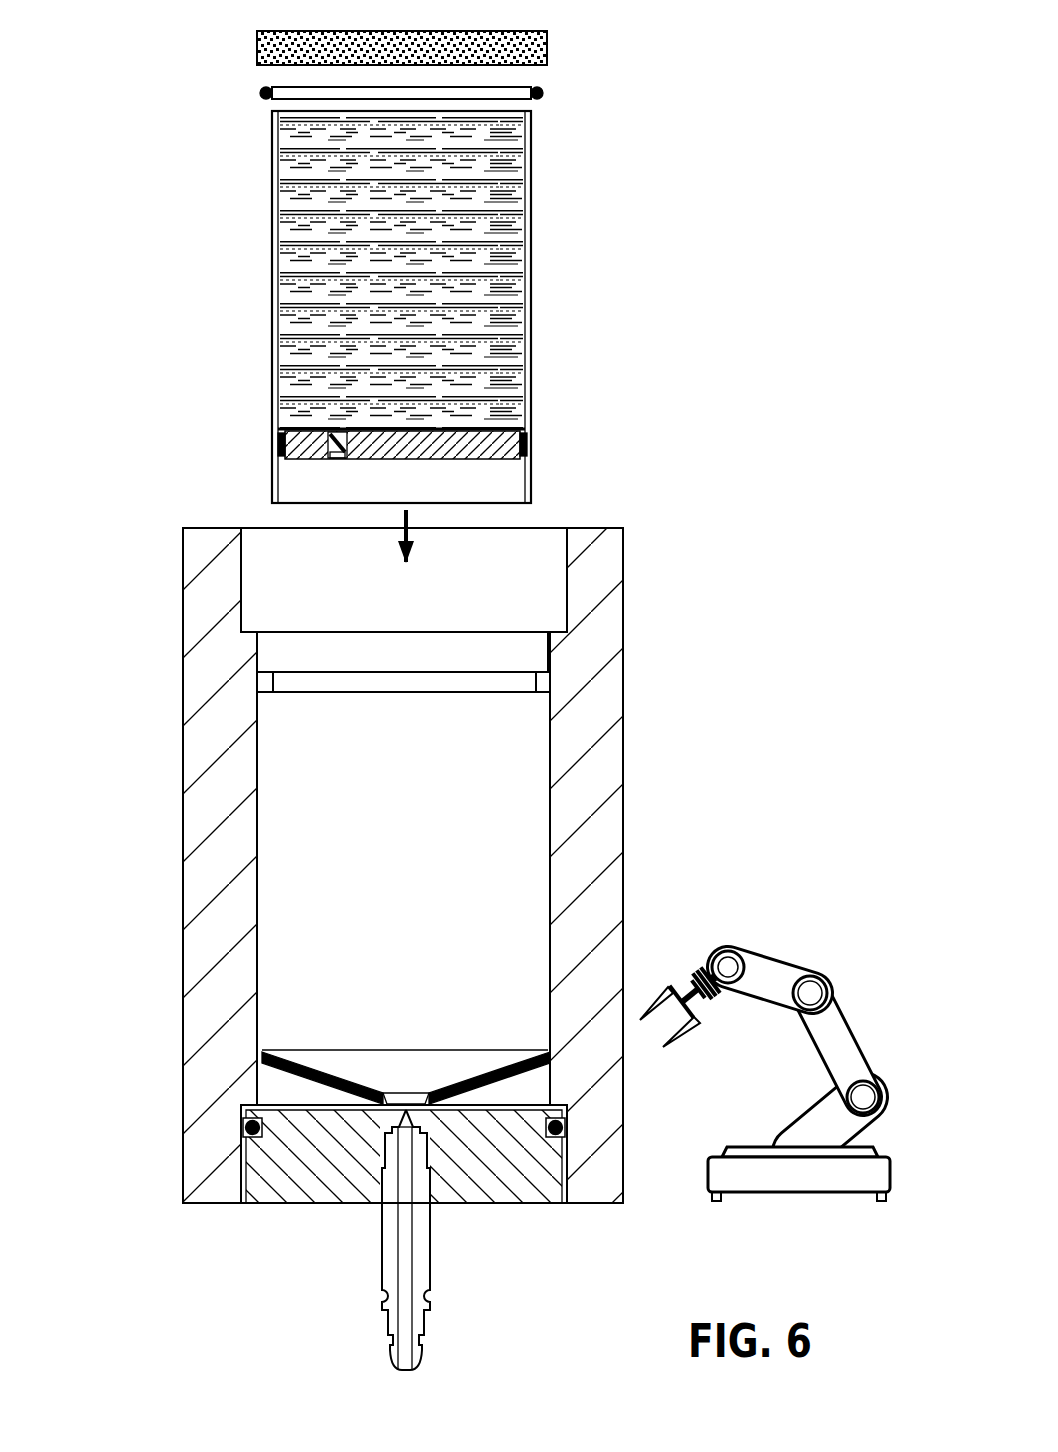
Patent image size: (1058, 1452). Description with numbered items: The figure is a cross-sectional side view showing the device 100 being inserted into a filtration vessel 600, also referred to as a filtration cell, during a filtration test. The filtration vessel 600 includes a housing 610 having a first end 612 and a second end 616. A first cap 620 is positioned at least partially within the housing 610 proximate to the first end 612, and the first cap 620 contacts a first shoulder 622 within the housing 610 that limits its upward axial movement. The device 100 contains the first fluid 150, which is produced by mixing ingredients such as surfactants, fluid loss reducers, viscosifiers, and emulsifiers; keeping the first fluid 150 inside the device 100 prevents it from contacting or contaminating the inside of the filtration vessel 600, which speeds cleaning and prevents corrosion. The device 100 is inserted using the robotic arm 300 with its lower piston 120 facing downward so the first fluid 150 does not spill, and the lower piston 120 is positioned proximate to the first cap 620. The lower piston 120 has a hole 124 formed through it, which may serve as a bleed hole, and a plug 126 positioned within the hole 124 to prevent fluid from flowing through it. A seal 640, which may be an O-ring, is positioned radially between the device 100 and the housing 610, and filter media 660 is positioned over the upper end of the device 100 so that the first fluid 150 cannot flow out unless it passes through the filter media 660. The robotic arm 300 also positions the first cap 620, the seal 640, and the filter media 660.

The device 100 is at (365, 294).
The lower piston 120 is at (467, 441).
The hole 124 is at (249, 404).
The plug 126 is at (333, 430).
The first fluid 150 is at (344, 255).
The robotic arm 300 is at (778, 940).
The filtration vessel 600 is at (342, 949).
The housing 610 is at (183, 878).
The first end 612 is at (183, 1150).
The second end 616 is at (183, 567).
The first cap 620 is at (247, 1205).
The first shoulder 622 is at (238, 1098).
The seal 640 is at (262, 92).
The filter media 660 is at (257, 46).